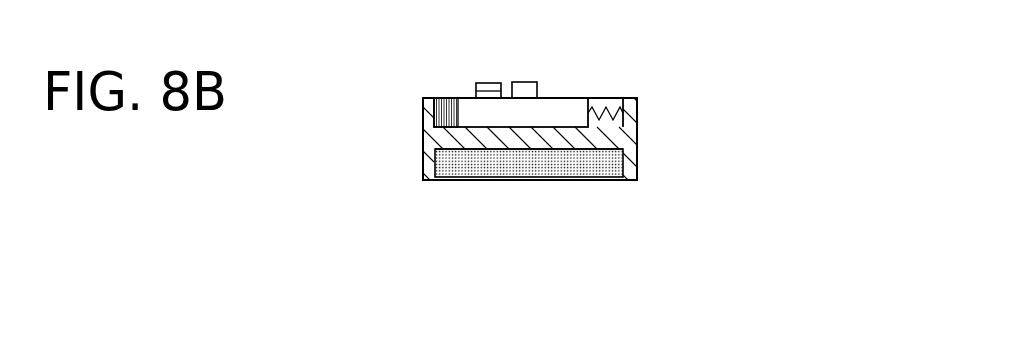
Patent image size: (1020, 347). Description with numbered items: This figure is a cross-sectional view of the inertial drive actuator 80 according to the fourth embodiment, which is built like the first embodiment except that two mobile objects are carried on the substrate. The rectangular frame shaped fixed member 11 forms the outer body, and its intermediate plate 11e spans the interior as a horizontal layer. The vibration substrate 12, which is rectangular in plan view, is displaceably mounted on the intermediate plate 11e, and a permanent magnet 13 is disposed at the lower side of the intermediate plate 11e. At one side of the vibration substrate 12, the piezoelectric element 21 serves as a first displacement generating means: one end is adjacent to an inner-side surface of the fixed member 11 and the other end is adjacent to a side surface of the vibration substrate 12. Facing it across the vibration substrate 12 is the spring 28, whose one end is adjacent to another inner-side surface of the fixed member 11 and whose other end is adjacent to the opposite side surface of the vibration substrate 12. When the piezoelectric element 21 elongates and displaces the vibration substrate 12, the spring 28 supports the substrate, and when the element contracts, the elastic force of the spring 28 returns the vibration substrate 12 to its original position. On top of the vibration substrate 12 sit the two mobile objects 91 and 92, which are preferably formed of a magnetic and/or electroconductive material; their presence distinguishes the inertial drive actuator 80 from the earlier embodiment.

The inertial drive actuator 80 is at (542, 323).
The fixed member 11 is at (436, 140).
The intermediate plate 11e is at (497, 135).
The vibration substrate 12 is at (568, 107).
The permanent magnet 13 is at (580, 153).
The piezoelectric element 21 is at (440, 110).
The spring 28 is at (621, 109).
The mobile object 91 is at (517, 83).
The mobile object 92 is at (473, 88).